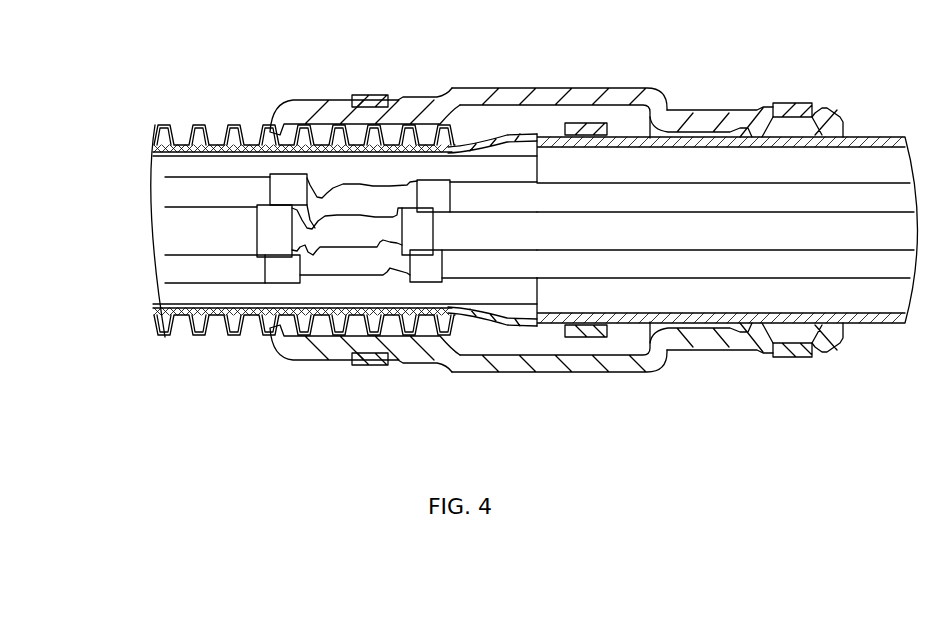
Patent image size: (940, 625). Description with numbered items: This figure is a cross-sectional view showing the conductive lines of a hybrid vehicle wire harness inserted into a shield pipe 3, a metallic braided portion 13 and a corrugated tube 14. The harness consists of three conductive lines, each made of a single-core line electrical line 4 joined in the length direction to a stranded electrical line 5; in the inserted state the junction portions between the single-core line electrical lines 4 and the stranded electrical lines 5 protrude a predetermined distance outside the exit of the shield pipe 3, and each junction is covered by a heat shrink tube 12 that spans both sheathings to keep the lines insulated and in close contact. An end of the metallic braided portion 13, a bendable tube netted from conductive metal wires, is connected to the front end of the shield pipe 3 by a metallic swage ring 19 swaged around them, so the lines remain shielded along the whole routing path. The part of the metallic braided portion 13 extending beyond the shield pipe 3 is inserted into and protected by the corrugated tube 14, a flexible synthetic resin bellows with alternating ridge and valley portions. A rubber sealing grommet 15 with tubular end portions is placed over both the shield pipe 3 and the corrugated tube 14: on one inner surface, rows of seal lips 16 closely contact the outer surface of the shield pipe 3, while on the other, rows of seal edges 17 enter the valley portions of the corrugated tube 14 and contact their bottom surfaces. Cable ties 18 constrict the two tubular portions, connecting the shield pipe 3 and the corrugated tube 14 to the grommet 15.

The shield pipe 3 is at (884, 137).
The single-core line electrical line 4 is at (885, 293).
The stranded electrical line 5 is at (190, 275).
The heat shrink tube 12 is at (364, 263).
The metallic braided portion 13 is at (507, 132).
The corrugated tube 14 is at (165, 124).
The grommet 15 is at (583, 88).
The seal lips 16 is at (845, 122).
The seal edges 17 is at (402, 125).
The cable ties 18 is at (368, 95).
The metallic swage ring 19 is at (603, 122).